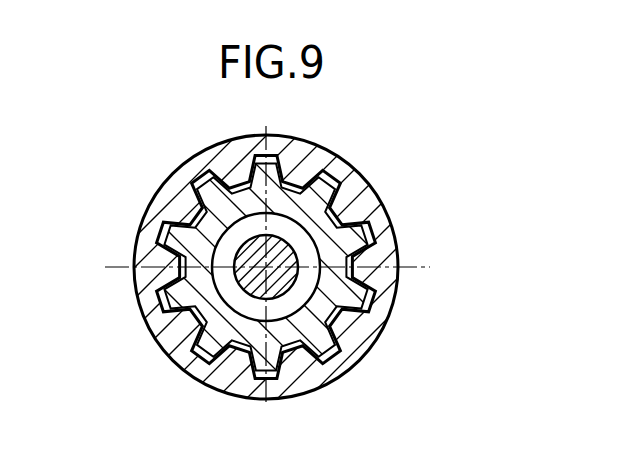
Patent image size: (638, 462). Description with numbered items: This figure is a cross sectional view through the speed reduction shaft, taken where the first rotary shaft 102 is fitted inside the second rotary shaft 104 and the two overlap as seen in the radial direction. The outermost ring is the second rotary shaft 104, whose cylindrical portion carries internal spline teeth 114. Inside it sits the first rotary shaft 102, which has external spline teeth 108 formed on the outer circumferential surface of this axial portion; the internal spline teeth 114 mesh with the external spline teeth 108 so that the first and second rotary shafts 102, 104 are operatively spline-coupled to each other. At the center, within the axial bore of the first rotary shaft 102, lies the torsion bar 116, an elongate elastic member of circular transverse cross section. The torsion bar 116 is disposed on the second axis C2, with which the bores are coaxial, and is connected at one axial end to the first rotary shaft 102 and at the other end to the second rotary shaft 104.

The first rotary shaft 102 is at (191, 320).
The second rotary shaft 104 is at (135, 219).
The external spline teeth 108 is at (210, 343).
The internal spline teeth 114 is at (312, 173).
The torsion bar 116 is at (252, 253).
The second axis C2 is at (266, 267).